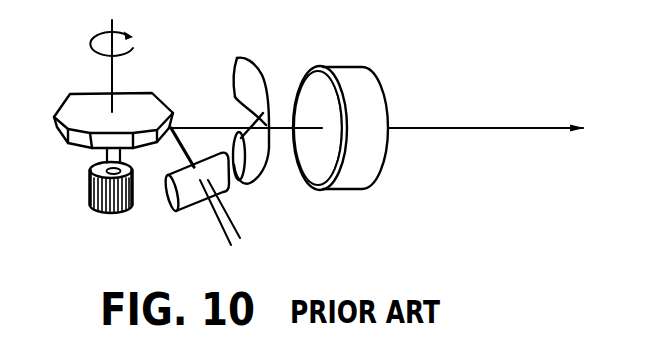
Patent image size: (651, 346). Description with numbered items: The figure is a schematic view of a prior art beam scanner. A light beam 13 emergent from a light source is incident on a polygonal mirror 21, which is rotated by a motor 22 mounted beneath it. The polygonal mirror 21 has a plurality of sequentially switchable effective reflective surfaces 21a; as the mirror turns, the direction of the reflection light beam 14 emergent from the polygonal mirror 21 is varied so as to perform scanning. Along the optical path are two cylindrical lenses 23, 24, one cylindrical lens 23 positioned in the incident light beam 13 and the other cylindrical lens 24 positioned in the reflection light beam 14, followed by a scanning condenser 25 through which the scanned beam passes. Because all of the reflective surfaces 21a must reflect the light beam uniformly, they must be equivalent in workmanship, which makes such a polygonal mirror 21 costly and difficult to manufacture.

The polygonal mirror 21 is at (93, 98).
The effective reflective surfaces 21a is at (104, 143).
The motor 22 is at (88, 194).
The cylindrical lens 23 is at (222, 185).
The light beam 13 is at (218, 223).
The reflection light beam 14 is at (203, 128).
The cylindrical lens 24 is at (253, 150).
The scanning condenser 25 is at (368, 80).